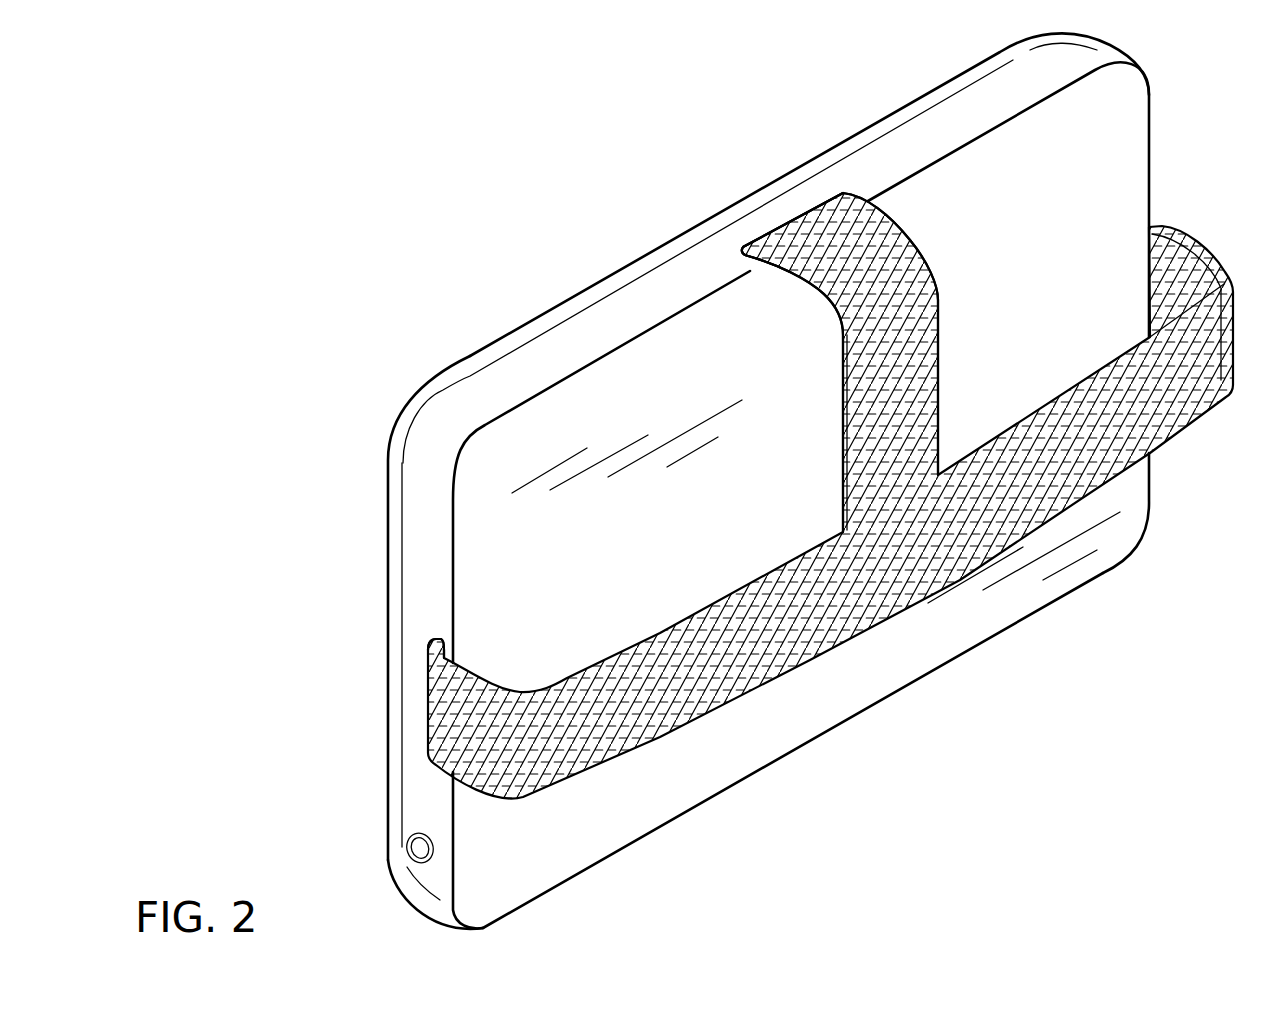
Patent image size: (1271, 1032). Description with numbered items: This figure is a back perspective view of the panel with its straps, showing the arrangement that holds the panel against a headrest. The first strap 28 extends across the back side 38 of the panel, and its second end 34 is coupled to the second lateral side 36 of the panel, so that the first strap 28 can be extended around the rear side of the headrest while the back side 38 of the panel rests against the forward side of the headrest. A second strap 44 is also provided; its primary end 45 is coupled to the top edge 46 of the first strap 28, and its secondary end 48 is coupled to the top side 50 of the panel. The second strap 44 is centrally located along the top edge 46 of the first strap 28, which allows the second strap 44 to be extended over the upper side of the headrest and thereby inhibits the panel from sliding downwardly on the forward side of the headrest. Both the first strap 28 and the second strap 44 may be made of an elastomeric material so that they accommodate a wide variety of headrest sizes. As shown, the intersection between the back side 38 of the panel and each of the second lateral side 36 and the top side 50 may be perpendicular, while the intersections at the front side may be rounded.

The first strap 28 is at (747, 474).
The second end 34 is at (441, 637).
The second lateral side 36 is at (698, 471).
The back side 38 is at (660, 772).
The second strap 44 is at (867, 300).
The primary end 45 is at (903, 500).
The top edge 46 is at (1037, 420).
The secondary end 48 is at (745, 254).
The top side 50 is at (555, 305).